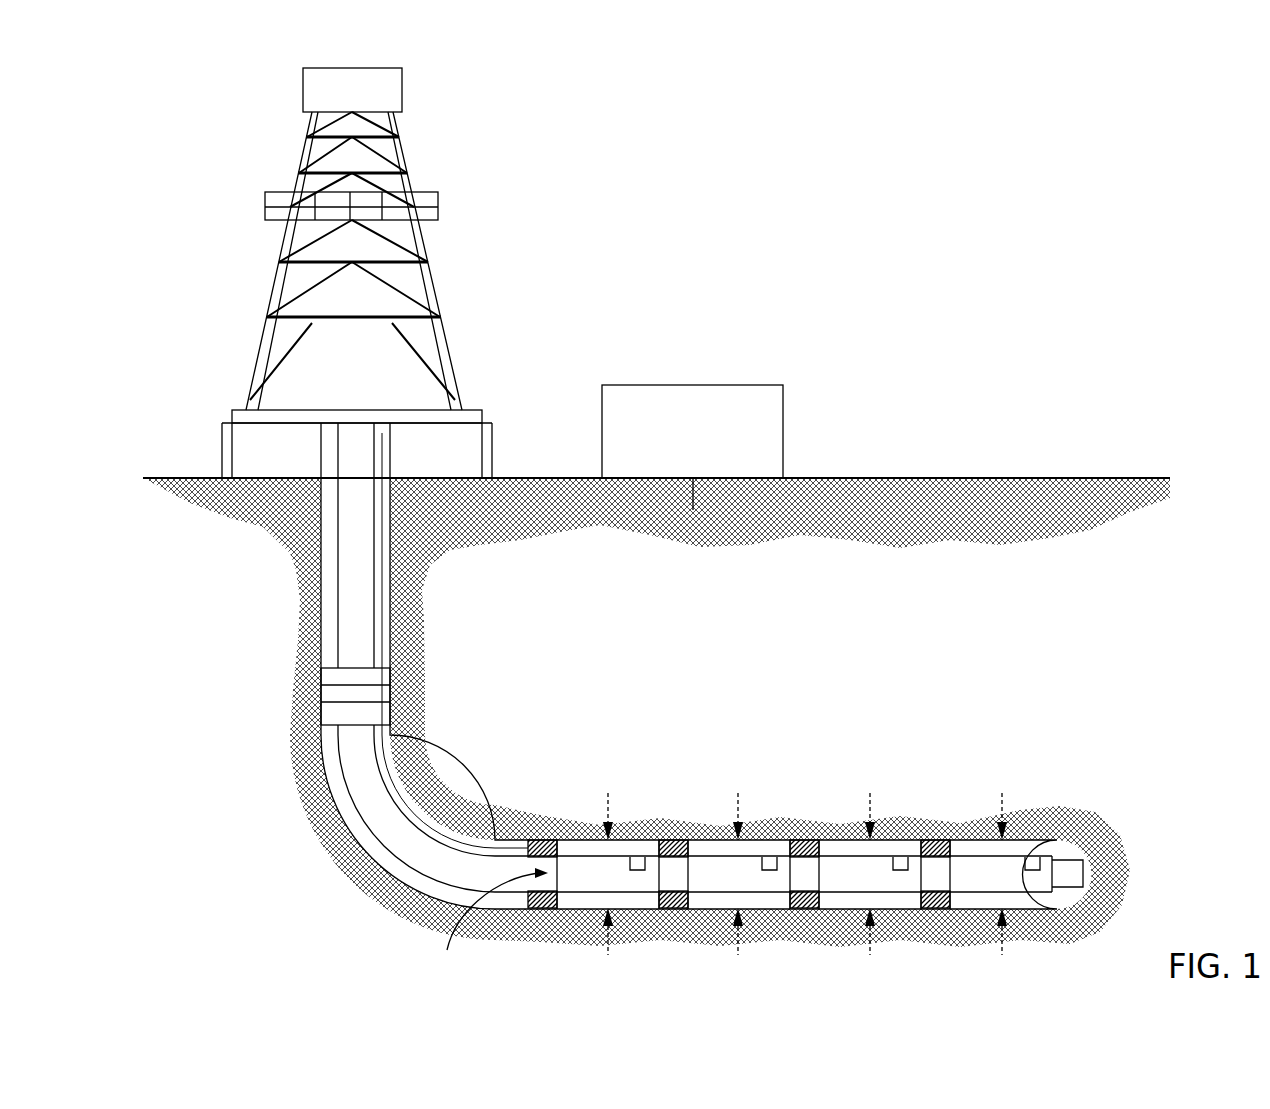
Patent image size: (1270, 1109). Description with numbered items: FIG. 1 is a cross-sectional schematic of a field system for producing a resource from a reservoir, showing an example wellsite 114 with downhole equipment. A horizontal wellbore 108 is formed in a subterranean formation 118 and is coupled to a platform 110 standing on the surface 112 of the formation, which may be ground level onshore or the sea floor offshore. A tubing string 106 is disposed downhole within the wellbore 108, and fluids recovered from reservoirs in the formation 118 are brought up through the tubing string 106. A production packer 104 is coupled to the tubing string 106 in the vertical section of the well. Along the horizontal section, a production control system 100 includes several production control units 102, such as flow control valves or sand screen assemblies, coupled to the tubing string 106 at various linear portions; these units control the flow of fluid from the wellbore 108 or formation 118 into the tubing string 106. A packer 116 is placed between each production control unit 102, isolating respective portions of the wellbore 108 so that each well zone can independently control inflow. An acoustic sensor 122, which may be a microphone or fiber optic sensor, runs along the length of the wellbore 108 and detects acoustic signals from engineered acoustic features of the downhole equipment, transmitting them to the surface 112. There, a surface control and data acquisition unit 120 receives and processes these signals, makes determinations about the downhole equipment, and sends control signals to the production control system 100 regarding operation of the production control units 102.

The production control system 100 is at (488, 929).
The production control unit 102 is at (580, 853).
The production packer 104 is at (388, 678).
The tubing string 106 is at (338, 580).
The wellbore 108 is at (321, 635).
The platform 110 is at (452, 364).
The surface 112 is at (847, 478).
The wellsite 114 is at (891, 192).
The packer 116 is at (543, 907).
The subterranean formation 118 is at (848, 681).
The surface control and data acquisition unit 120 is at (690, 385).
The acoustic sensor 122 is at (383, 630).